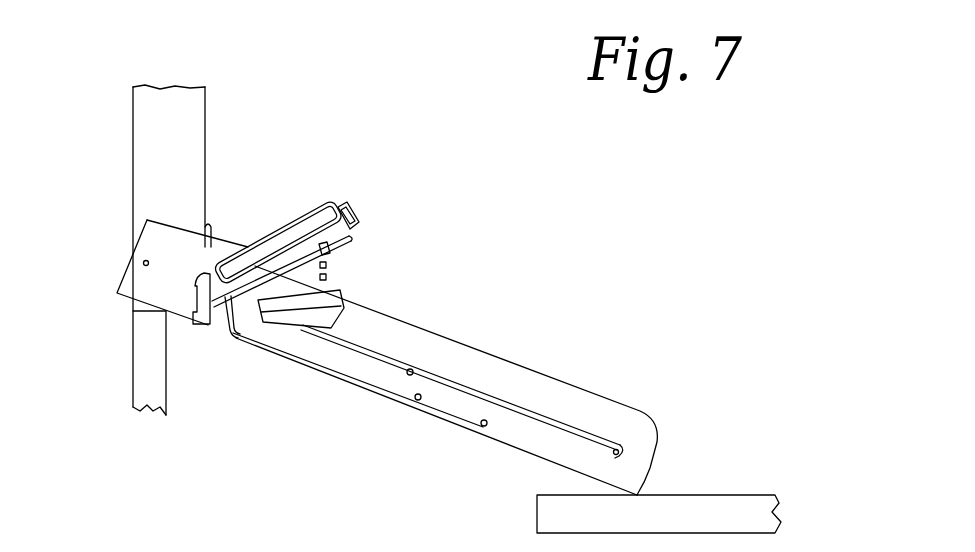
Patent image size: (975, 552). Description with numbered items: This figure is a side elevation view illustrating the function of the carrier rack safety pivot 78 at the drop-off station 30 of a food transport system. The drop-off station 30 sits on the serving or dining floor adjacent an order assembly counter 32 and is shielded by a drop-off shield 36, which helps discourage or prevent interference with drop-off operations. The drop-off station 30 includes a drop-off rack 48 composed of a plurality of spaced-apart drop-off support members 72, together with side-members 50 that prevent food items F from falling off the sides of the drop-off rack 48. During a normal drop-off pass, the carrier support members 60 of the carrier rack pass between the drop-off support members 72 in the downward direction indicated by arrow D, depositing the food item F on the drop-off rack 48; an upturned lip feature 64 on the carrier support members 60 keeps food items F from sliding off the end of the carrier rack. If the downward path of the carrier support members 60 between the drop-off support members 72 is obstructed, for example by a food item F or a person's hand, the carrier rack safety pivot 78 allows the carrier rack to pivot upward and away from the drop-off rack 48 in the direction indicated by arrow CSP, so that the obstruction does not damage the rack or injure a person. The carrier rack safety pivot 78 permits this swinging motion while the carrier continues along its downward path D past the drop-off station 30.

The drop-off station 30 is at (393, 427).
The order assembly counter 32 is at (700, 507).
The drop-off shield 36 is at (155, 93).
The drop-off rack 48 is at (392, 355).
The side-members 50 is at (548, 397).
The carrier support members 60 is at (352, 238).
The upturned lip feature 64 is at (348, 204).
The drop-off support members 72 is at (230, 290).
The carrier rack safety pivot 78 is at (188, 287).
The food item F is at (330, 303).
The arrow indicating downward direction D is at (190, 362).
The arrow indicating carrier rack safety pivot direction CSP is at (320, 242).